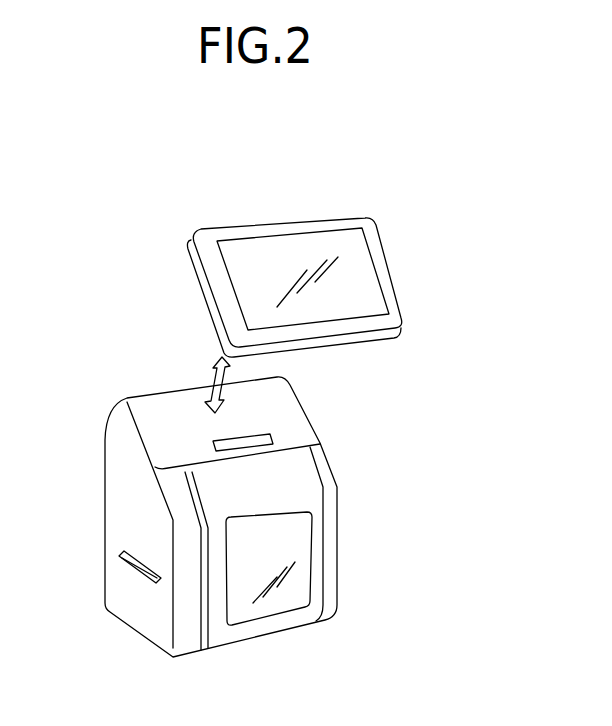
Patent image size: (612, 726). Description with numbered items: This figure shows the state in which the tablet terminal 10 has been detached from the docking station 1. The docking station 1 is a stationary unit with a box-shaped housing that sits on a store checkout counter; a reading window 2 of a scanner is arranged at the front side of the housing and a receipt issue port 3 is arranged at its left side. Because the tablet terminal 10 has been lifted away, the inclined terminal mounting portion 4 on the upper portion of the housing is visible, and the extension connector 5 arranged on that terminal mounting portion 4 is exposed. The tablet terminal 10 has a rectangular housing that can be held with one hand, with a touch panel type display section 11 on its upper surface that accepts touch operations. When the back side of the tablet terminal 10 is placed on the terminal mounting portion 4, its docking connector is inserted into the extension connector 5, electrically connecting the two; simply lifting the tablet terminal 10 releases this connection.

The docking station 1 is at (105, 457).
The reading window 2 is at (302, 547).
The receipt issue port 3 is at (132, 577).
The terminal mounting portion 4 is at (283, 393).
The extension connector 5 is at (258, 432).
The tablet terminal 10 is at (283, 218).
The touch panel type display section 11 is at (360, 293).